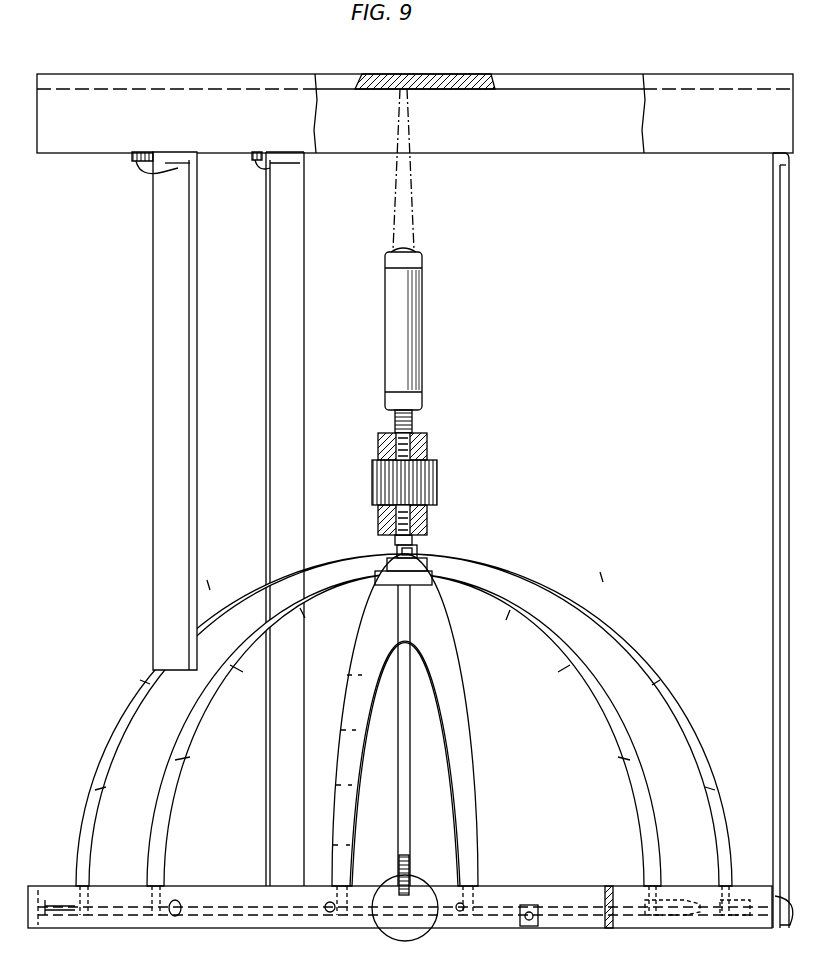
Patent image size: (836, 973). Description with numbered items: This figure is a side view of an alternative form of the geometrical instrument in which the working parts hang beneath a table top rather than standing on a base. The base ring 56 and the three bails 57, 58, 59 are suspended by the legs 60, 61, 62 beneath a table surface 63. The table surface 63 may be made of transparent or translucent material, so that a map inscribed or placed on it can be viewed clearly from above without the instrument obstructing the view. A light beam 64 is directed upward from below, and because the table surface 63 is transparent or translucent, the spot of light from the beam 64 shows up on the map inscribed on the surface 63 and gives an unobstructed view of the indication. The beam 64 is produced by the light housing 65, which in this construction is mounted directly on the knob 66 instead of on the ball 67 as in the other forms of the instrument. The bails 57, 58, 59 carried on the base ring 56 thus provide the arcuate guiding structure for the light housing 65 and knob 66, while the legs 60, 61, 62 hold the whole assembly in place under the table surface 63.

The base ring 56 is at (220, 893).
The bail 57 is at (103, 790).
The bail 58 is at (180, 790).
The bail 59 is at (351, 782).
The leg 60 is at (182, 304).
The leg 61 is at (297, 304).
The leg 62 is at (774, 291).
The table surface 63 is at (432, 76).
The beam 64 is at (410, 194).
The light housing 65 is at (418, 340).
The knob 66 is at (437, 478).
The ball 67 is at (428, 932).